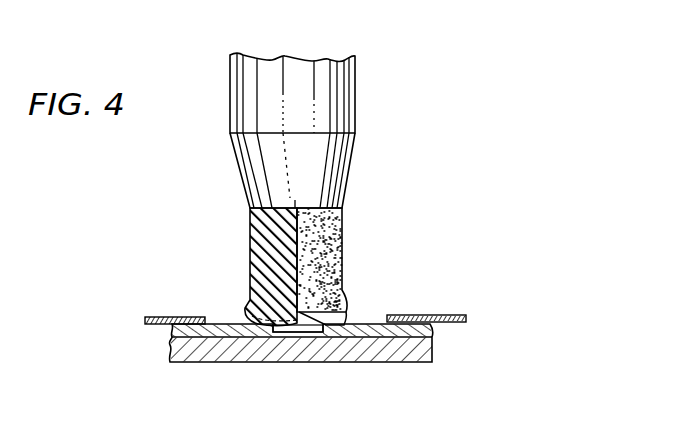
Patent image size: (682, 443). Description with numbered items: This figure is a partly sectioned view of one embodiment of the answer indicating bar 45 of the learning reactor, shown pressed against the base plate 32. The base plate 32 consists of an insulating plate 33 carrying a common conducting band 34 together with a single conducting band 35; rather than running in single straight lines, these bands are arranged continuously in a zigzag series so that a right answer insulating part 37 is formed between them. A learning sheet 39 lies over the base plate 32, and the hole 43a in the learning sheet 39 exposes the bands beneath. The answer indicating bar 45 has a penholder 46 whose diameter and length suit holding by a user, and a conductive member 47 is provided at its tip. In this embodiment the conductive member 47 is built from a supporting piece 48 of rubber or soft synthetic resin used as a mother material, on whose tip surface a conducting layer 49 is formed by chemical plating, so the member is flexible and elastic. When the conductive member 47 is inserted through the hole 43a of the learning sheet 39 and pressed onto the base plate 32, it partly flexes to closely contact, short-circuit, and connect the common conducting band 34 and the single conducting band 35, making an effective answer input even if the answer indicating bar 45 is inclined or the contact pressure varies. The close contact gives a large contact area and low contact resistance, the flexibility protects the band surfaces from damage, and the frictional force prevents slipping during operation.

The base plate 32 is at (375, 362).
The insulating plate 33 is at (217, 350).
The common conducting band 34 is at (360, 322).
The single conducting band 35 is at (172, 331).
The right answer insulating part 37 is at (310, 329).
The learning sheet 39 is at (452, 323).
The hole 43a is at (390, 313).
The answer indicating bar 45 is at (301, 168).
The penholder 46 is at (330, 105).
The conductive member 47 is at (345, 227).
The supporting piece 48 is at (251, 233).
The conducting layer 49 is at (274, 306).